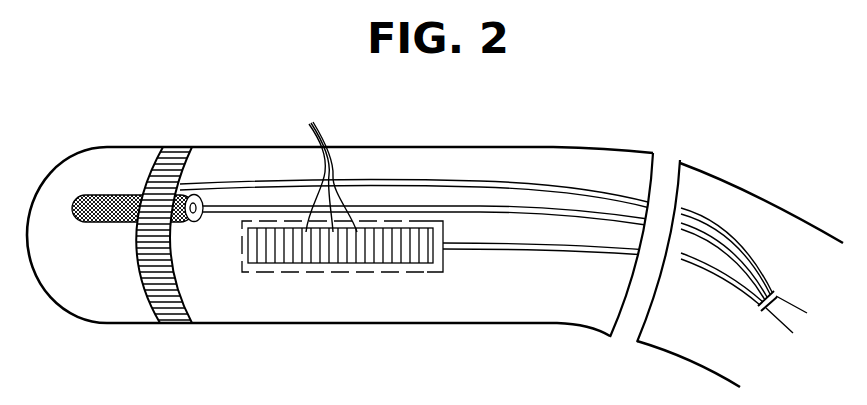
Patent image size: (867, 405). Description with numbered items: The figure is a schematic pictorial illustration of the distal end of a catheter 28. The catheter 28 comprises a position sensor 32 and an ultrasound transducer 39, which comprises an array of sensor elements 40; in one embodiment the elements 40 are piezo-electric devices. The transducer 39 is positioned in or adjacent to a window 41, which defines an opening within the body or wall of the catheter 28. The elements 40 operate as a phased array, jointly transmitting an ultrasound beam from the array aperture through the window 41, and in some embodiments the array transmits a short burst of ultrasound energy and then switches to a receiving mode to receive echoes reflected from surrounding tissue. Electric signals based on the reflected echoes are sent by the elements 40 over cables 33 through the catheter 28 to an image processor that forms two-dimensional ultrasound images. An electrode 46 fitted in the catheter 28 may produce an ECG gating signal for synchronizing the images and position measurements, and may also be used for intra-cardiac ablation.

The catheter 28 is at (522, 146).
The position sensor 32 is at (104, 217).
The cables 33 is at (775, 309).
The ultrasound transducer 39 is at (432, 278).
The sensor elements 40 is at (319, 170).
The window 41 is at (441, 221).
The electrode 46 is at (173, 307).